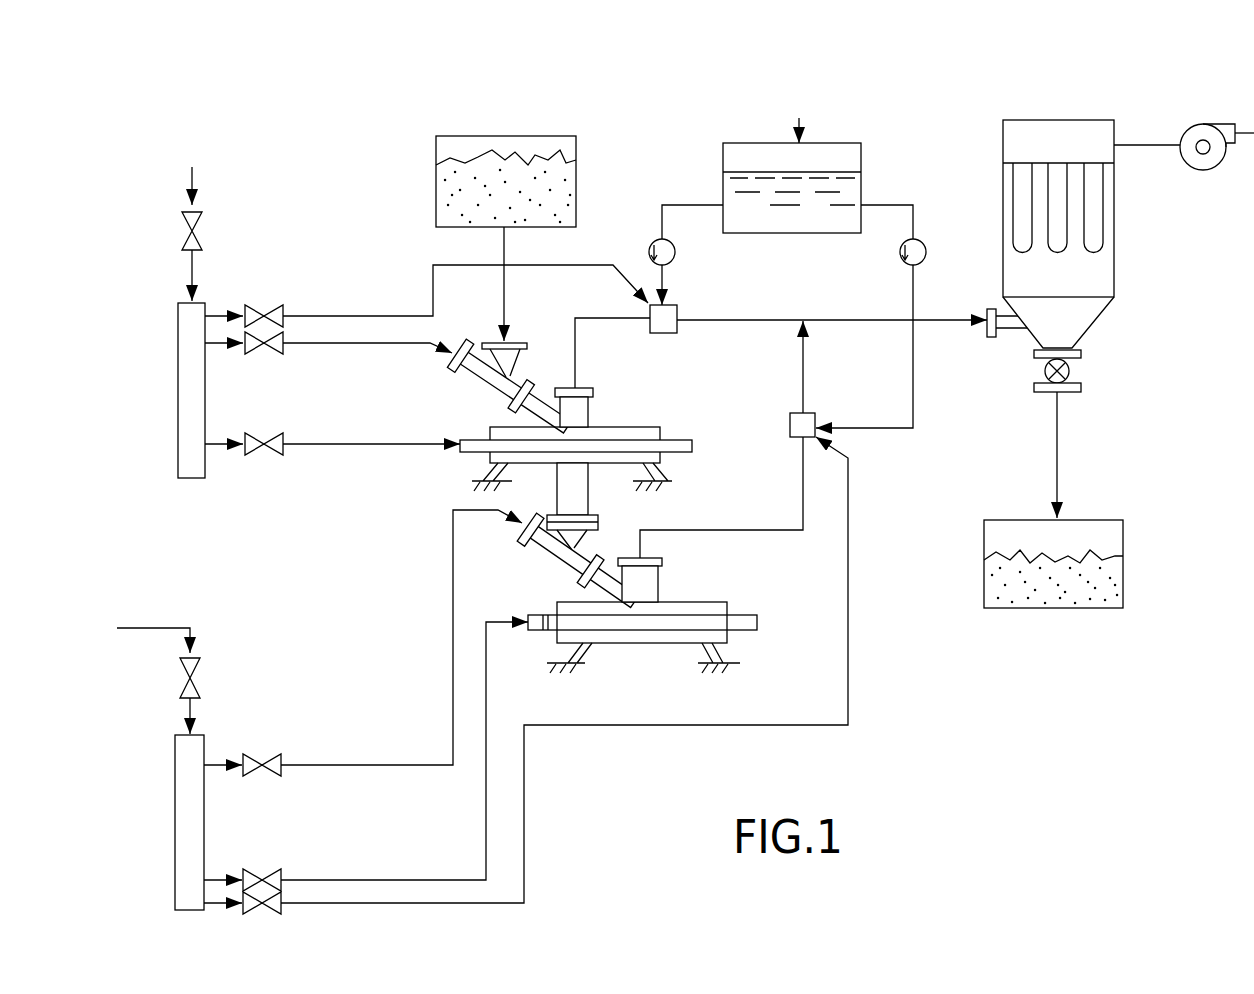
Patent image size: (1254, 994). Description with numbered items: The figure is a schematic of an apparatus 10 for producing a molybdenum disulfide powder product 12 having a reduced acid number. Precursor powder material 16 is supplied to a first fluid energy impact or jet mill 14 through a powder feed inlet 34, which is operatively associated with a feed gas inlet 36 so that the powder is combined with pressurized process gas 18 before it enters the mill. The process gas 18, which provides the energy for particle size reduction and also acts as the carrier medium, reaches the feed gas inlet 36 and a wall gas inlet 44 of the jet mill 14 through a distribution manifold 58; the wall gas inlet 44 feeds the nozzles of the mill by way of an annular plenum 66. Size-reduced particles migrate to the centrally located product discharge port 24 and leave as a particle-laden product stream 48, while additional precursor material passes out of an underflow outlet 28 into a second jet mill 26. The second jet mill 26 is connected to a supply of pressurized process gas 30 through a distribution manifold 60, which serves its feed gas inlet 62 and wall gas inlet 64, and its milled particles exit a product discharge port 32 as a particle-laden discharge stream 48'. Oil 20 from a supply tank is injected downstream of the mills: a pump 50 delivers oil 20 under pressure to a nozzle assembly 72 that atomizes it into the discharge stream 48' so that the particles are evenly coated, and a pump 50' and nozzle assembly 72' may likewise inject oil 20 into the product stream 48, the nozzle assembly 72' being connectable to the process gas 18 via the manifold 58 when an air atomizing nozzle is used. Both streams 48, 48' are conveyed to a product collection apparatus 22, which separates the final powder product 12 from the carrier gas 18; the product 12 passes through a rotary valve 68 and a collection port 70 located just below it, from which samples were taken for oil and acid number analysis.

The apparatus 10 is at (248, 95).
The molybdenum disulfide powder product 12 is at (1123, 586).
The jet mill 14 is at (632, 425).
The molybdenum disulfide precursor powder material 16 is at (436, 180).
The pressurized process gas 18 is at (192, 180).
The oil 20 is at (799, 118).
The product collection apparatus 22 is at (1003, 142).
The product discharge port 24 is at (584, 388).
The second jet mill 26 is at (730, 606).
The underflow outlet 28 is at (588, 493).
The pressurized process gas 30 is at (138, 628).
The product discharge port 32 is at (662, 562).
The powder feed inlet 34 is at (518, 342).
The feed gas inlet 36 is at (452, 366).
The wall gas inlet 44 is at (462, 451).
The particle-laden product stream 48 is at (832, 343).
The particle-laden discharge stream 48' is at (721, 497).
The pump 50 is at (871, 316).
The pump 50' is at (700, 255).
The distribution manifold 58 is at (178, 372).
The distribution manifold 60 is at (175, 800).
The feed gas inlet 62 is at (520, 545).
The wall gas inlet 64 is at (536, 630).
The annular plenum 66 is at (692, 446).
The rotary valve 68 is at (1069, 371).
The collection port 70 is at (1072, 392).
The nozzle assembly 72 is at (788, 379).
The nozzle assembly 72' is at (690, 305).